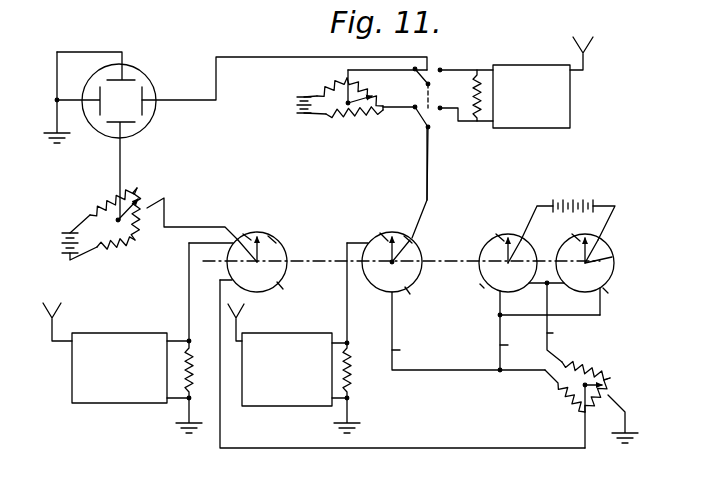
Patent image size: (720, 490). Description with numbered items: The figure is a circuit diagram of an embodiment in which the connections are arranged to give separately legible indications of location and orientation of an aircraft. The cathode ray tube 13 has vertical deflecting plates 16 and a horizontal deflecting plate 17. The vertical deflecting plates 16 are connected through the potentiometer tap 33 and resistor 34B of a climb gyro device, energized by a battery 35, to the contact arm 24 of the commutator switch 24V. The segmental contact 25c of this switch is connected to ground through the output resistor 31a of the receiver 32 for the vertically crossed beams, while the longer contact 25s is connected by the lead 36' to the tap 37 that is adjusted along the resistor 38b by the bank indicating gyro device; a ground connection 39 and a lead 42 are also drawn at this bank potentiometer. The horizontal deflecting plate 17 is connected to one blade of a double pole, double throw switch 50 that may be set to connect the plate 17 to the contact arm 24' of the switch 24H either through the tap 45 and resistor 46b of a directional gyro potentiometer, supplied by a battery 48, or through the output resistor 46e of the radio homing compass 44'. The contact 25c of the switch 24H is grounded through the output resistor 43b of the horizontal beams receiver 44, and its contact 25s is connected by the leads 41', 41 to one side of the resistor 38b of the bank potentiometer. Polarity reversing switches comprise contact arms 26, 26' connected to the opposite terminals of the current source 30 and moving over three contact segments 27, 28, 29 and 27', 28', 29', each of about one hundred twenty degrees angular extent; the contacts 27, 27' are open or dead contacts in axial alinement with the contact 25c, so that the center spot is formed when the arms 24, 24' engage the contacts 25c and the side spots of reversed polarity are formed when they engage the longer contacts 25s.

The cathode ray tube 13 is at (150, 80).
The vertical deflecting plates 16 is at (118, 102).
The horizontal deflecting plate 17 is at (98, 93).
The potentiometer resistor of climb gyro device 34B is at (133, 188).
The potentiometer tap of climb gyro device 33 is at (120, 221).
The battery 35 is at (61, 250).
The contact arm 24 is at (238, 251).
The commutator switch 24V is at (272, 238).
The segmental contact 25c is at (276, 241).
The longer contact 25s is at (277, 284).
The commutator switch 24H is at (386, 232).
The contact arm 24' is at (379, 254).
The lead 41' is at (409, 350).
The double pole, double throw switch 50 is at (440, 66).
The output resistor of radio homing compass 46e is at (467, 95).
The radio homing compass 44' is at (550, 82).
The battery 48 is at (292, 107).
The potentiometer tap of directional gyro device 45 is at (350, 99).
The potentiometer resistor of directional gyro device 46b is at (333, 118).
The contact arm of polarity reversing switch 26 is at (521, 303).
The contact segment 27 is at (488, 225).
The contact segment 28 is at (467, 294).
The contact segment 29 is at (550, 304).
The battery or current source 30 is at (573, 200).
The contact arm of polarity reversing switch 26' is at (603, 274).
The contact segment 27' is at (564, 225).
The contact segment 28' is at (565, 321).
The contact segment 29' is at (621, 298).
The lead 41 is at (515, 346).
The conductor 42 is at (561, 333).
The tap 37 is at (577, 386).
The resistor of bank potentiometer 38b is at (609, 370).
The ground connection 39 is at (630, 413).
The lead 36' is at (402, 364).
The receiver for the vertically crossed beams 32 is at (134, 333).
The output resistor of receiver 31a is at (198, 366).
The horizontal beams receiver 44 is at (287, 355).
The output resistor of horizontal beams receiver 43b is at (358, 380).